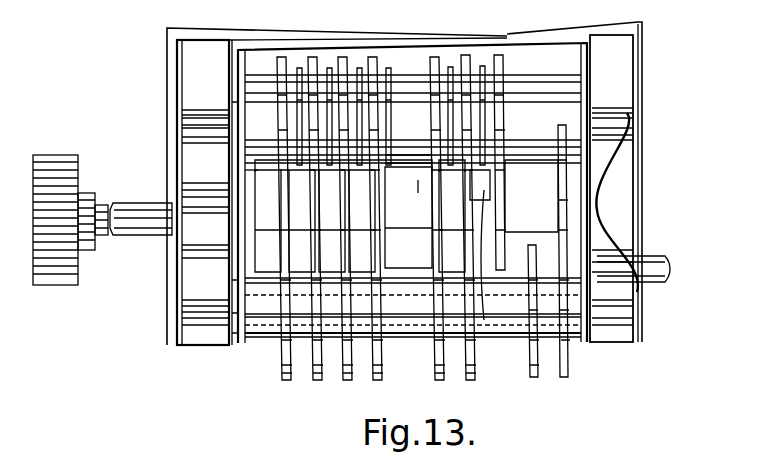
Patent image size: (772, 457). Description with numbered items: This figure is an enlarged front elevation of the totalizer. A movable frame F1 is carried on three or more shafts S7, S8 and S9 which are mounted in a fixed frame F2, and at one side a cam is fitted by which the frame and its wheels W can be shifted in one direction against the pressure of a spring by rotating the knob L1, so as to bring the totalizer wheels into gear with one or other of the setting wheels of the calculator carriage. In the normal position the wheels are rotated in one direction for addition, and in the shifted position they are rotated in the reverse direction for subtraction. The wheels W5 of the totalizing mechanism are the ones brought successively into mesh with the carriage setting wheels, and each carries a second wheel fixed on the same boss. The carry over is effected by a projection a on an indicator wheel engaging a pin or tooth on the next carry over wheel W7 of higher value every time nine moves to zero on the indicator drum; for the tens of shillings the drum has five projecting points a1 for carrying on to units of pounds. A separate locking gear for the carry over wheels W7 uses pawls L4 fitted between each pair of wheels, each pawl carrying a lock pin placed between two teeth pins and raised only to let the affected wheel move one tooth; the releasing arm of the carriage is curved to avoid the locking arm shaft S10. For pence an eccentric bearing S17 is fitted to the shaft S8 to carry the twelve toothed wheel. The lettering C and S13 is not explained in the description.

The knob L1 is at (60, 265).
The fixed frame F2 is at (186, 37).
The movable frame F1 is at (396, 47).
The wheels W is at (490, 20).
The carry over wheel W7 is at (311, 56).
The totalizer wheel W5 is at (381, 341).
The locking pawl L4 is at (328, 68).
The projecting points a1 is at (387, 163).
The projection a is at (471, 208).
The eccentric bearing S17 is at (484, 220).
The shaft S9 is at (191, 128).
The shaft S13 is at (575, 163).
The cam C is at (197, 180).
The shaft S7 is at (620, 305).
The shaft S8 is at (613, 182).
The locking arm shaft S10 is at (605, 268).